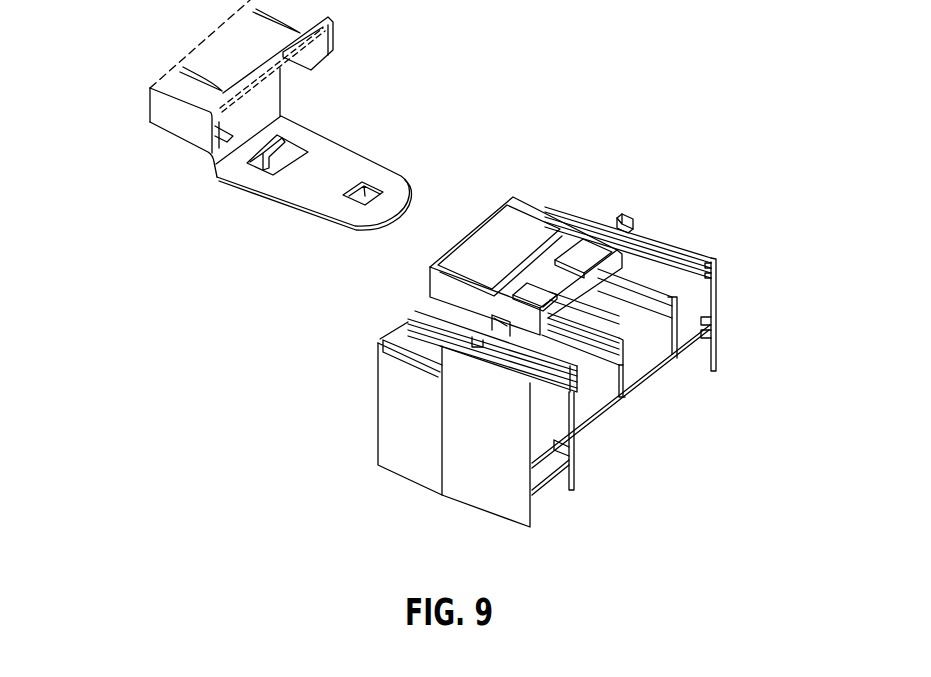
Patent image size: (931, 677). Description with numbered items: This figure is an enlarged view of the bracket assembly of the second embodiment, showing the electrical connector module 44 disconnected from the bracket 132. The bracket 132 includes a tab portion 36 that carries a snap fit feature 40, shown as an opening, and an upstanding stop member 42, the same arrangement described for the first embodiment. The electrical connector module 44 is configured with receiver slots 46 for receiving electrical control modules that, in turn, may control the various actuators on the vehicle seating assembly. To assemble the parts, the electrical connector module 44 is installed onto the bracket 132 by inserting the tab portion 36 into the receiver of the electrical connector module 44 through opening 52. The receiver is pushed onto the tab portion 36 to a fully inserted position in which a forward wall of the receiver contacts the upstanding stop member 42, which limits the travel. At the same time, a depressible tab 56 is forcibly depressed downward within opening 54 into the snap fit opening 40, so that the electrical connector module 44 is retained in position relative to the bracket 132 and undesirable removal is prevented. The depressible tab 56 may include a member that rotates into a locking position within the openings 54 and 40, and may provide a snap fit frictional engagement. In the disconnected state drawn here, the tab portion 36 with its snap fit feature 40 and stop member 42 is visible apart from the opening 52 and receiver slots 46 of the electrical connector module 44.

The bracket 132 is at (195, 164).
The tab portion 36 is at (312, 194).
The snap fit feature 40 is at (364, 188).
The stop member 42 is at (265, 150).
The opening 52 is at (478, 198).
The opening 54 is at (550, 262).
The depressible tab 56 is at (565, 277).
The electrical connector module 44 is at (695, 247).
The receiver slots 46 is at (700, 289).